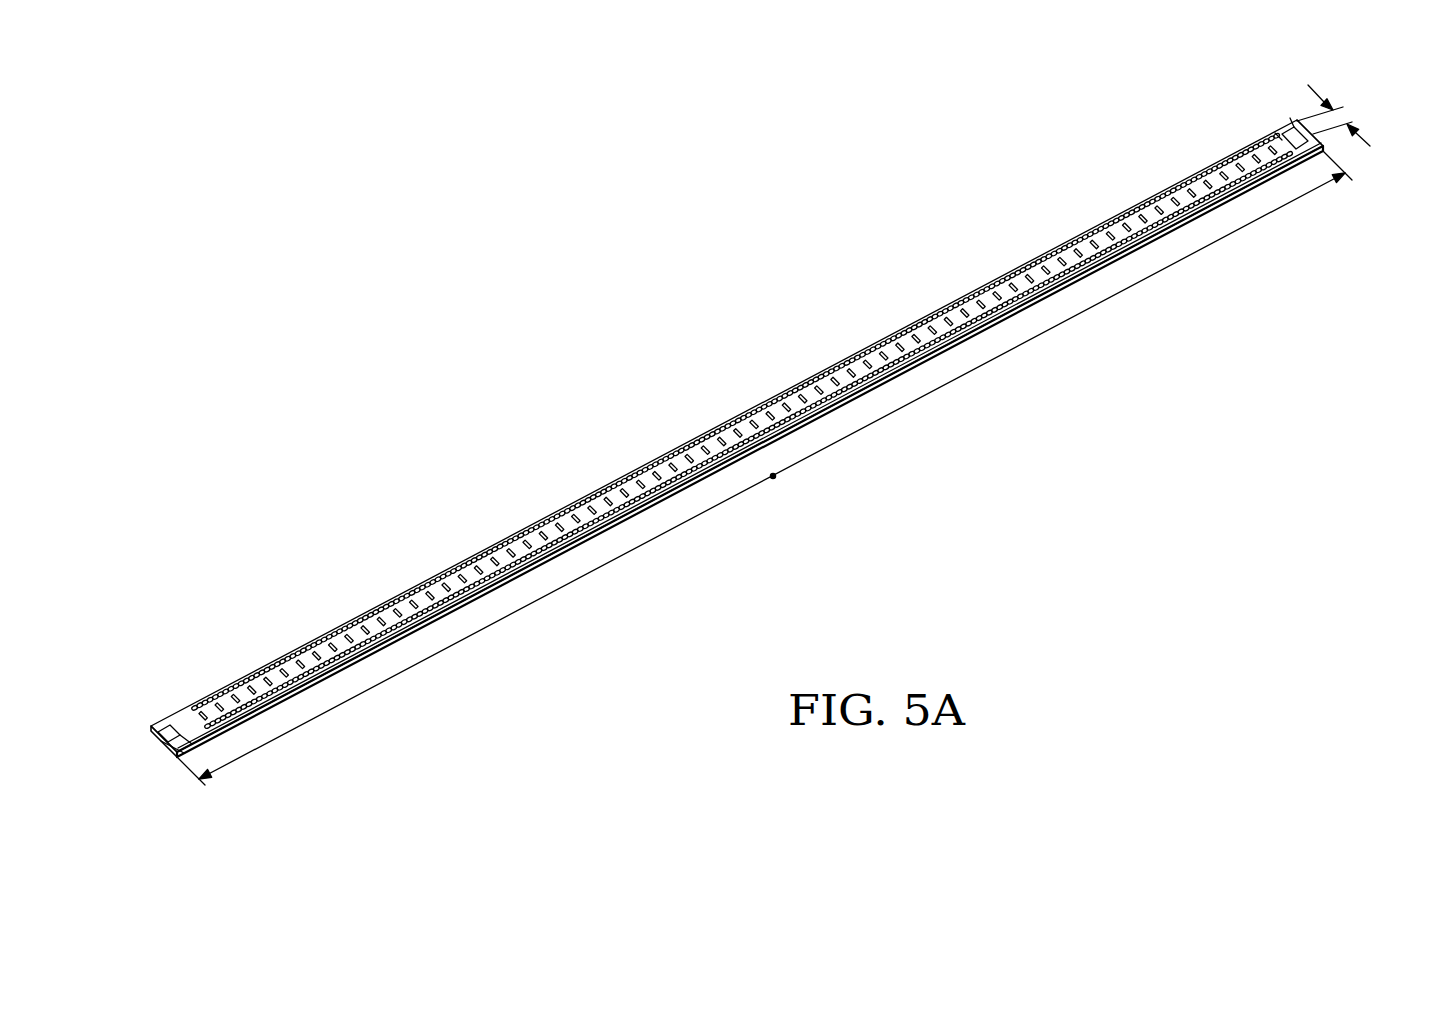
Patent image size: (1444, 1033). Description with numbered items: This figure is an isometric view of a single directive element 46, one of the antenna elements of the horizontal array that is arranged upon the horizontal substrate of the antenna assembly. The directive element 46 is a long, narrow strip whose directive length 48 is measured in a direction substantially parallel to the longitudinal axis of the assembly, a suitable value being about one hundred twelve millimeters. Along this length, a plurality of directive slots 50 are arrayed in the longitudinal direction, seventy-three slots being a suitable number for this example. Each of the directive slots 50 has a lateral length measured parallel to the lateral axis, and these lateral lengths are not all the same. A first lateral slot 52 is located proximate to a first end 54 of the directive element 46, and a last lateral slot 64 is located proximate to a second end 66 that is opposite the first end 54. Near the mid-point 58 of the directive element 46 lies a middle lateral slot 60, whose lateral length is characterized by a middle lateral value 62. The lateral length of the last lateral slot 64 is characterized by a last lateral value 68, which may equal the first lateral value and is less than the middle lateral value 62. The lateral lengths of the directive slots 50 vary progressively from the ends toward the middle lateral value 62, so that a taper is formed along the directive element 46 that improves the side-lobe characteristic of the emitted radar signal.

The directive element 46 is at (387, 437).
The directive length 48 is at (997, 360).
The directive slots 50 is at (525, 542).
The first lateral slot 52 is at (192, 724).
The first end 54 is at (158, 757).
The mid-point 58 is at (775, 479).
The middle lateral slot 60 is at (733, 418).
The middle lateral value 62 is at (740, 436).
The last lateral slot 64 is at (1272, 150).
The second end 66 is at (1327, 143).
The last lateral value 68 is at (1343, 108).